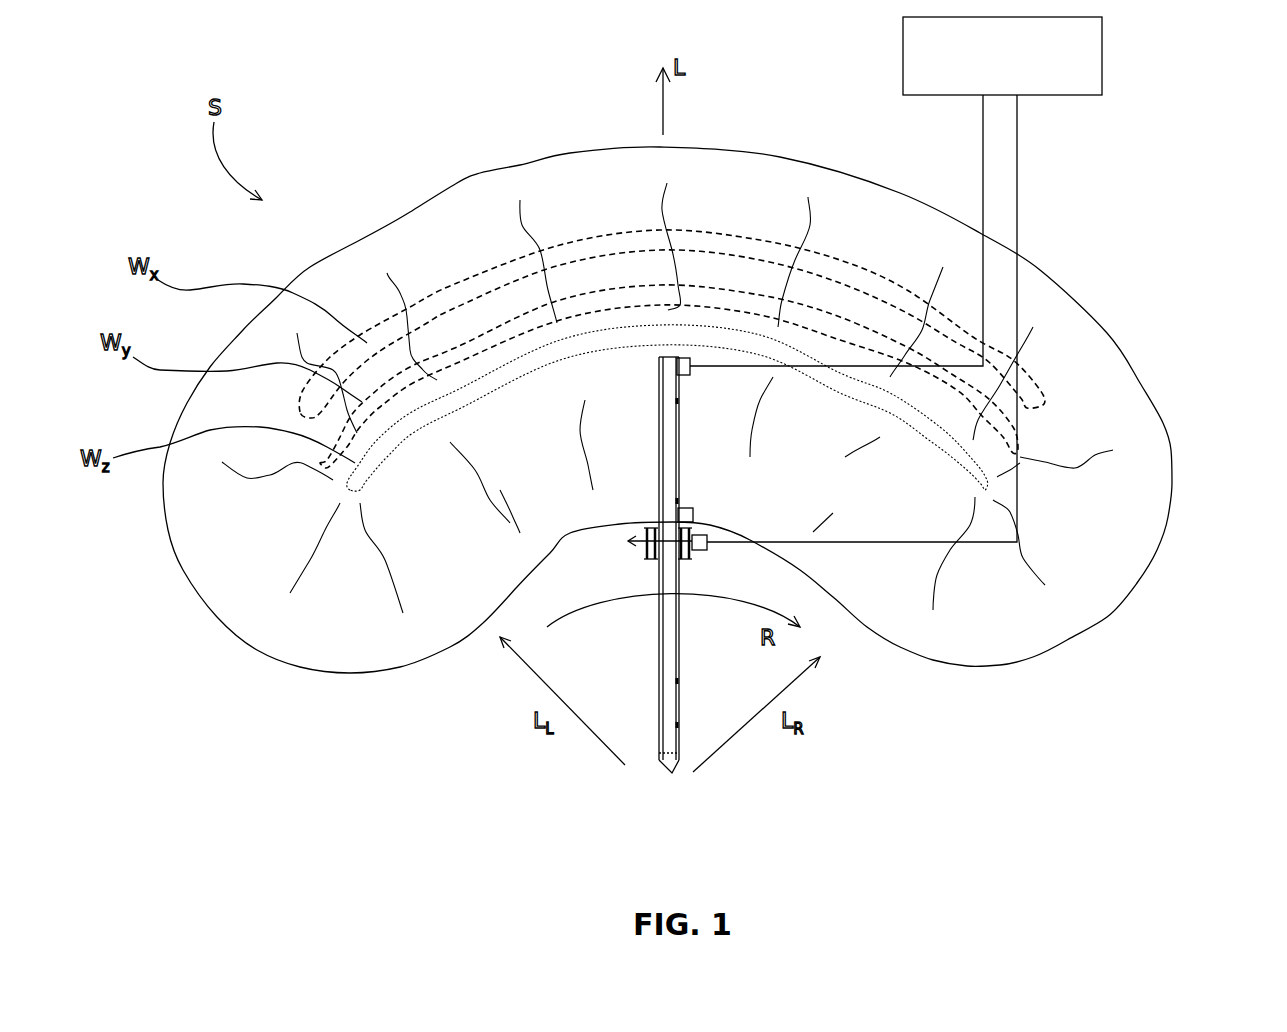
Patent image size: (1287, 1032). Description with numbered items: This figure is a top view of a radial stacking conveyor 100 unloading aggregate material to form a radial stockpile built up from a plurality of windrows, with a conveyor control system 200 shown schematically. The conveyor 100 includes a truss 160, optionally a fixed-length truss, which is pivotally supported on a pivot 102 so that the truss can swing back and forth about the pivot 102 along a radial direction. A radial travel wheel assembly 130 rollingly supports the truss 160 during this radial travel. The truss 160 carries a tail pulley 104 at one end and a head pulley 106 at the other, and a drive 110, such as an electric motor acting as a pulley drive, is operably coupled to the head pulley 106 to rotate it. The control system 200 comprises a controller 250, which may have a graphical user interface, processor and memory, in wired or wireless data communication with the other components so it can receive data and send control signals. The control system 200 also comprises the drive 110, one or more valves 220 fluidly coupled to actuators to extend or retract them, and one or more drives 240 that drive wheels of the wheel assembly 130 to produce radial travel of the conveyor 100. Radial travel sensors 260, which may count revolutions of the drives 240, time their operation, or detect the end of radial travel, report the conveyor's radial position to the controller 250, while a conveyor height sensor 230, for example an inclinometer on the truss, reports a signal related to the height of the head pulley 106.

The radial stacking conveyor 100 is at (605, 598).
The pivot 102 is at (672, 775).
The tail pulley 104 is at (659, 755).
The head pulley 106 is at (657, 358).
The drive 110 is at (686, 377).
The radial travel wheel assembly 130 is at (630, 552).
The truss 160 is at (658, 685).
The control system 200 is at (1163, 153).
The valves 220 is at (854, 322).
The drives 240 is at (854, 322).
The radial travel sensors 260 is at (698, 535).
The conveyor height sensor 230 is at (684, 508).
The controller 250 is at (984, 53).